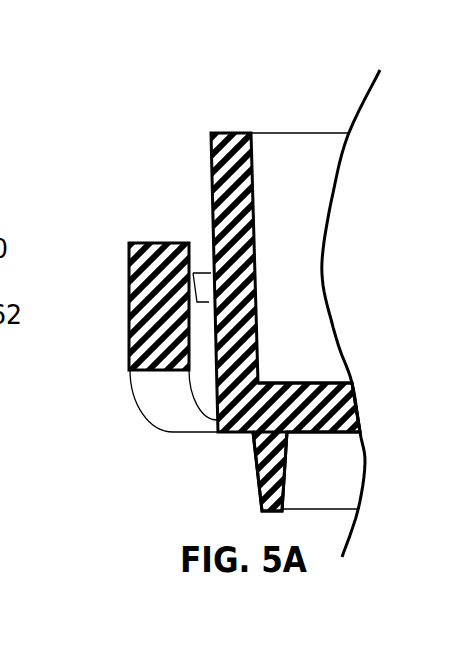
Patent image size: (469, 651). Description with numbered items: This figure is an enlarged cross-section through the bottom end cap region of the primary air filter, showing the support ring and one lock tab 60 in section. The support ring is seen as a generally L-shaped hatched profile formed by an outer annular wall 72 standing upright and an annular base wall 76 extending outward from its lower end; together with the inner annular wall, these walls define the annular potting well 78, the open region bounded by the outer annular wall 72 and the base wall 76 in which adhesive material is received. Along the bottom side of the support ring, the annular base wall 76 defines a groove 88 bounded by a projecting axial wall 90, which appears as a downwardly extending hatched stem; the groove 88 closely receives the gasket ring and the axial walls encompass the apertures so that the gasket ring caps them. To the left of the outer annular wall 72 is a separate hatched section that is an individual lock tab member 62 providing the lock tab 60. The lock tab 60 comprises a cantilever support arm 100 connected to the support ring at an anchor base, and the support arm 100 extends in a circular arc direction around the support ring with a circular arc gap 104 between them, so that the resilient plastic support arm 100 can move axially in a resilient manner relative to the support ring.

The lock tab 60 is at (124, 240).
The lock tab member 62 is at (128, 343).
The outer annular wall 72 is at (227, 136).
The annular base wall 76 is at (316, 400).
The annular potting well 78 is at (305, 195).
The groove 88 is at (340, 471).
The projecting axial wall 90 is at (258, 478).
The cantilever support arm 100 is at (162, 406).
The circular arc gap 104 is at (197, 246).